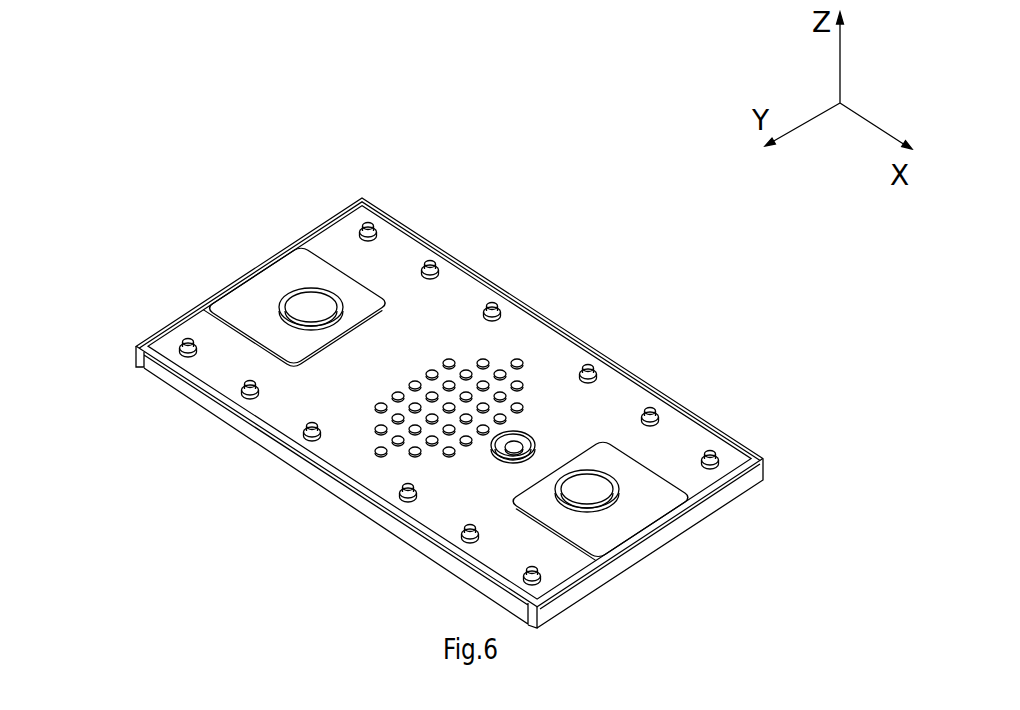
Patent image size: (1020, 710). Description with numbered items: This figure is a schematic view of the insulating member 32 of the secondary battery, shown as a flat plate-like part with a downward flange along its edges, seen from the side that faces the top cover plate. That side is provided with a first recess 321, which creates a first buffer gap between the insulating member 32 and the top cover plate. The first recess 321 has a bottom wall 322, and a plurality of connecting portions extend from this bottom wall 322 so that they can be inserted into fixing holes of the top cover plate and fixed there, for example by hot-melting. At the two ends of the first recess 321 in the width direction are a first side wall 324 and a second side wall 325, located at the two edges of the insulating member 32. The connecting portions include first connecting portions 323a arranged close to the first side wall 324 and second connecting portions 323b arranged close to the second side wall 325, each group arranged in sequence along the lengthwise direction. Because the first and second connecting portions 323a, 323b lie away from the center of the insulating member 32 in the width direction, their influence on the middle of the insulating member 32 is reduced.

The insulating member 32 is at (155, 155).
The first recess 321 is at (452, 305).
The bottom wall 322 is at (291, 404).
The first connecting portion 323a is at (592, 369).
The second connecting portion 323b is at (408, 498).
The first side wall 324 is at (398, 227).
The second side wall 325 is at (338, 480).